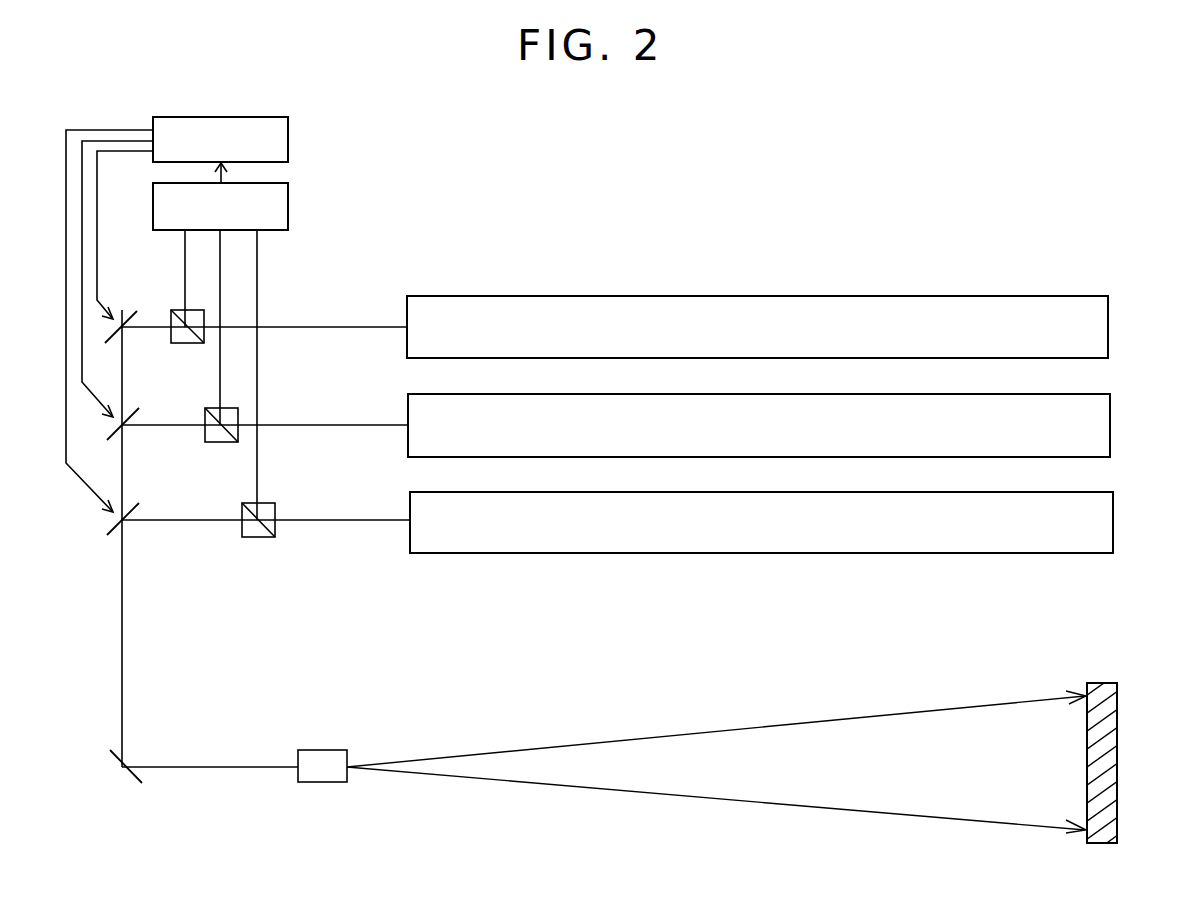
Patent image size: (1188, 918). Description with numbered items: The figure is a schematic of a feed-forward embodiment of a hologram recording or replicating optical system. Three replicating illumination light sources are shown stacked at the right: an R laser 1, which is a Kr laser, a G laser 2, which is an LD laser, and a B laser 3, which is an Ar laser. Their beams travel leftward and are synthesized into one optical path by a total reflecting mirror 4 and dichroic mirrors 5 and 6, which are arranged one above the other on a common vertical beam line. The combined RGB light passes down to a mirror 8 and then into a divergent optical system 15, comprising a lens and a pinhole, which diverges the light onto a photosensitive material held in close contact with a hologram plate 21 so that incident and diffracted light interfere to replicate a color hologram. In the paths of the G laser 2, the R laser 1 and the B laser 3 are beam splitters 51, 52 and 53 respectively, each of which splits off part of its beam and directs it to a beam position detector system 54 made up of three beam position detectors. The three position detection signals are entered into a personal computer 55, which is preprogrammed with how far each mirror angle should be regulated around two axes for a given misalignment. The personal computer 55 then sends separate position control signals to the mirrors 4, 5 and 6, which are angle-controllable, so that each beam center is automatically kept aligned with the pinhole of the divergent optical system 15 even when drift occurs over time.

The R laser 1 is at (1102, 424).
The G laser 2 is at (1100, 328).
The B laser 3 is at (1105, 519).
The total reflecting mirror 4 is at (124, 317).
The dichroic mirror 5 is at (132, 414).
The dichroic mirror 6 is at (134, 512).
The mirror 8 is at (127, 786).
The divergent optical system 15 is at (323, 783).
The hologram plate 21 is at (1112, 754).
The beam splitter 51 is at (186, 344).
The beam splitter 52 is at (220, 443).
The beam splitter 53 is at (258, 538).
The beam position detector system 54 is at (290, 204).
The personal computer 55 is at (290, 141).